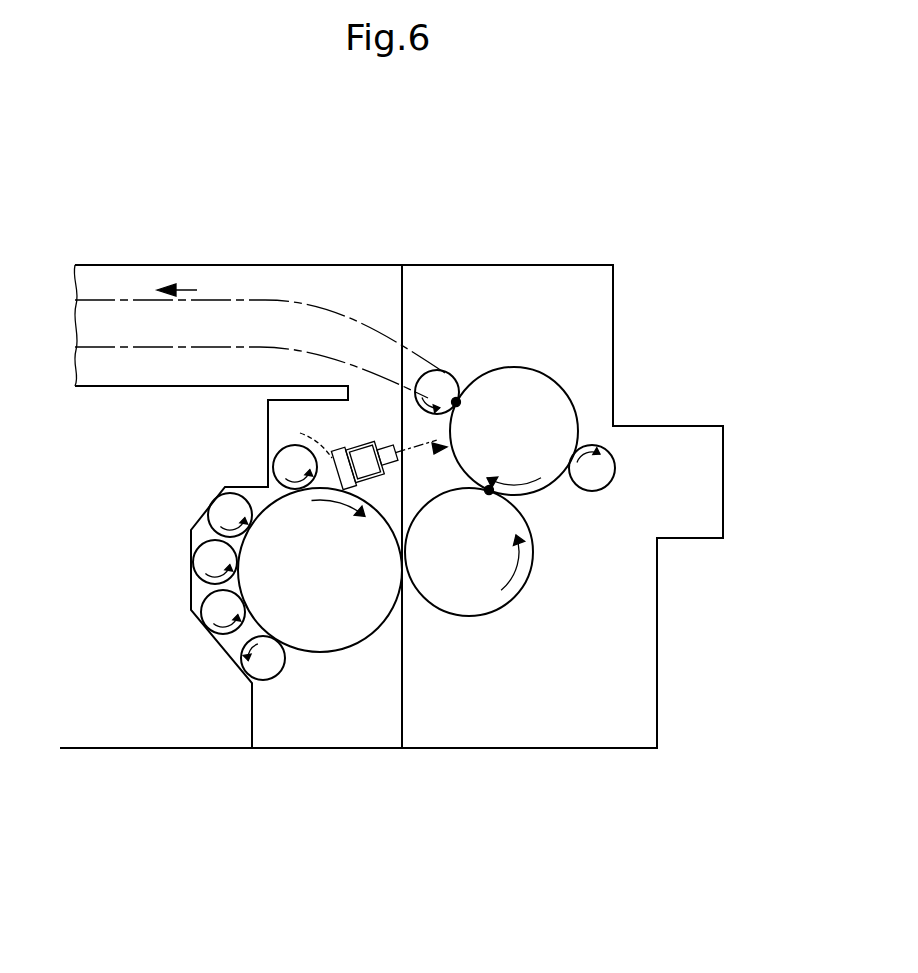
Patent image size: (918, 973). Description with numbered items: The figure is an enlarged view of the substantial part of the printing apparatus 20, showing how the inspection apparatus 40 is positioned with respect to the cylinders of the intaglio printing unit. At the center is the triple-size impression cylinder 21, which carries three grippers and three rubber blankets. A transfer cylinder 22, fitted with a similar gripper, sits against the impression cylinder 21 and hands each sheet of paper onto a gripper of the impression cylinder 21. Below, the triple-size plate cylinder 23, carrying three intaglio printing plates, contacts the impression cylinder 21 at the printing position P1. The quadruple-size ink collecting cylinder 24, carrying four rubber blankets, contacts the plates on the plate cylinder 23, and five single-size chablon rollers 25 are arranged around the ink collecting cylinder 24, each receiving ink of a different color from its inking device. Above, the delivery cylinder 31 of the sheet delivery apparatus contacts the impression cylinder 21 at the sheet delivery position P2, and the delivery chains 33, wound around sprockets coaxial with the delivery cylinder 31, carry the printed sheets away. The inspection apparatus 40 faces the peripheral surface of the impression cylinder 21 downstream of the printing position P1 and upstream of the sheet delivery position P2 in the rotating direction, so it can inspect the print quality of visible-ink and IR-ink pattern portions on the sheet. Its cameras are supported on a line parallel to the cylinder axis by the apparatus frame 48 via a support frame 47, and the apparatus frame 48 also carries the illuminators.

The printing apparatus 20 is at (520, 245).
The impression cylinder 21 is at (553, 378).
The transfer cylinder 22 is at (578, 450).
The plate cylinder 23 is at (533, 560).
The ink collecting cylinder 24 is at (330, 640).
The chablon rollers 25 is at (285, 468).
The delivery cylinder 31 is at (441, 377).
The delivery chains 33 is at (268, 298).
The inspection apparatus 40 is at (389, 433).
The support frame 47 is at (300, 433).
The apparatus frame 48 is at (368, 270).
The printing position P1 is at (491, 489).
The sheet delivery position P2 is at (458, 401).